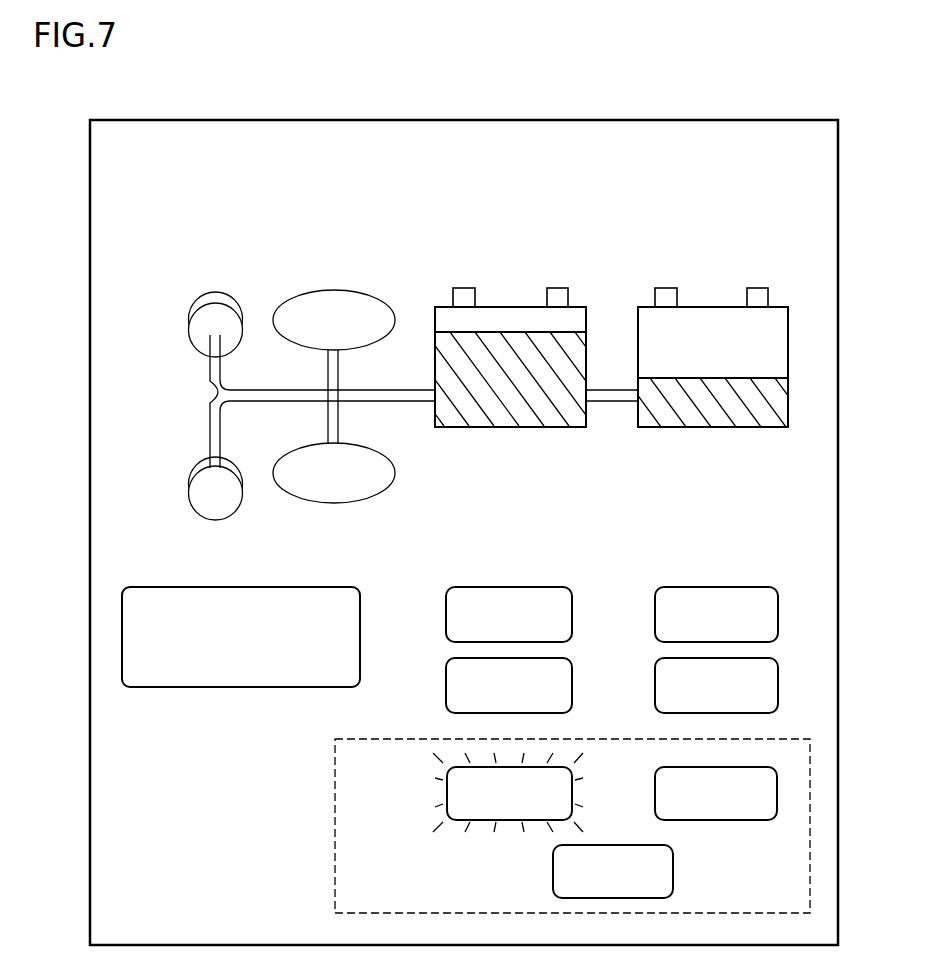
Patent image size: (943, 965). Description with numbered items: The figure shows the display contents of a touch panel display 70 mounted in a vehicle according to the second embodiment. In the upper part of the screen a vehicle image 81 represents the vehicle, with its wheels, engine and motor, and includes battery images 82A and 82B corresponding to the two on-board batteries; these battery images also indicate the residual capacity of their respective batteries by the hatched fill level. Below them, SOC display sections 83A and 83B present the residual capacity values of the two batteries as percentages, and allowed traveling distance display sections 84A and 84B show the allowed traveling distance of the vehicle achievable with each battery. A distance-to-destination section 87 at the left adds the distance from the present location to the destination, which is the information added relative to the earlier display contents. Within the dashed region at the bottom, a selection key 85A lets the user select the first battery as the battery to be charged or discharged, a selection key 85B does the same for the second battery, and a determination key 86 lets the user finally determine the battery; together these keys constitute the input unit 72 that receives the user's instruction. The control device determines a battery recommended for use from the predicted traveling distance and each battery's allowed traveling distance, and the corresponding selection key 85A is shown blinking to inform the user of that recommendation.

The touch panel display 70 is at (752, 120).
The vehicle image 81 is at (442, 232).
The battery image 82A is at (515, 292).
The battery image 82B is at (715, 292).
The SOC display section 83A is at (507, 587).
The SOC display section 83B is at (715, 587).
The allowed traveling distance display section 84A is at (446, 693).
The allowed traveling distance display section 84B is at (655, 693).
The selection key 85A is at (447, 795).
The selection key 85B is at (730, 821).
The determination key 86 is at (553, 873).
The distance to destination display 87 is at (270, 587).
The input unit 72 is at (335, 850).